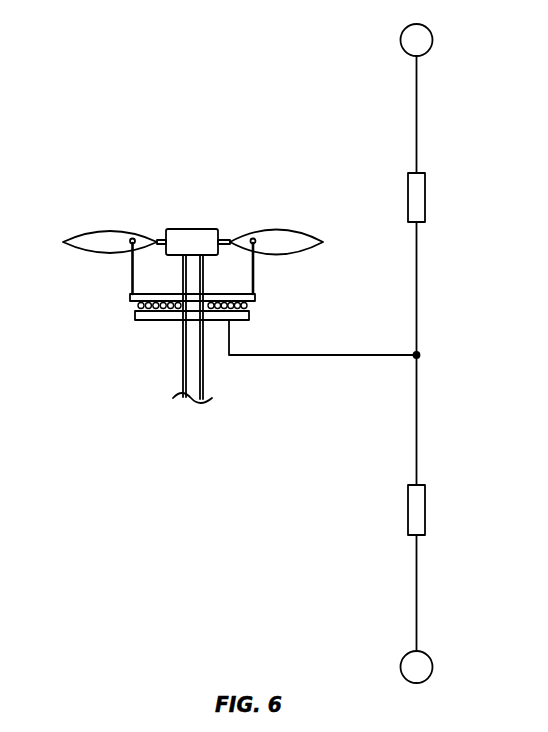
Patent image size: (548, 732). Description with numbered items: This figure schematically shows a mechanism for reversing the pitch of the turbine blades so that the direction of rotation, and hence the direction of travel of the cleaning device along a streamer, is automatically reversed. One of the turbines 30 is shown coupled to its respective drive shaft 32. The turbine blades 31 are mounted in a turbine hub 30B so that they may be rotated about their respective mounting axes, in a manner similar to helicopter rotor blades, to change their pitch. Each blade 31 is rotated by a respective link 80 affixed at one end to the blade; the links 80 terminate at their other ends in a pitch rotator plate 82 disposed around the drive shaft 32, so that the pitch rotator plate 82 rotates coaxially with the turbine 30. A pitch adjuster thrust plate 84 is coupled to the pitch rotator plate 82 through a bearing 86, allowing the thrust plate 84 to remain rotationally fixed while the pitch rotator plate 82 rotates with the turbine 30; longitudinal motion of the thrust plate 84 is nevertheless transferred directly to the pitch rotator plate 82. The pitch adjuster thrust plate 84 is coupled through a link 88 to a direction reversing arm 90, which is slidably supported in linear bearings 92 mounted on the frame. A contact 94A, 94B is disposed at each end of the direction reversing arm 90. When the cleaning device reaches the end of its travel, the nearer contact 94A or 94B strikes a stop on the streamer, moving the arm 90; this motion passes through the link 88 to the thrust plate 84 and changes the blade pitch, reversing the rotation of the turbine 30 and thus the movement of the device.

The turbine 30 is at (98, 473).
The turbine hub 30B is at (192, 228).
The turbine blades 31 is at (105, 228).
The drive shaft 32 is at (180, 361).
The link 80 is at (127, 268).
The pitch rotator plate 82 is at (140, 292).
The pitch adjuster thrust plate 84 is at (153, 320).
The bearing 86 is at (137, 307).
The link 88 is at (327, 355).
The direction reversing arm 90 is at (418, 275).
The linear bearings 92 is at (425, 197).
The contact 94A is at (432, 667).
The contact 94B is at (432, 40).